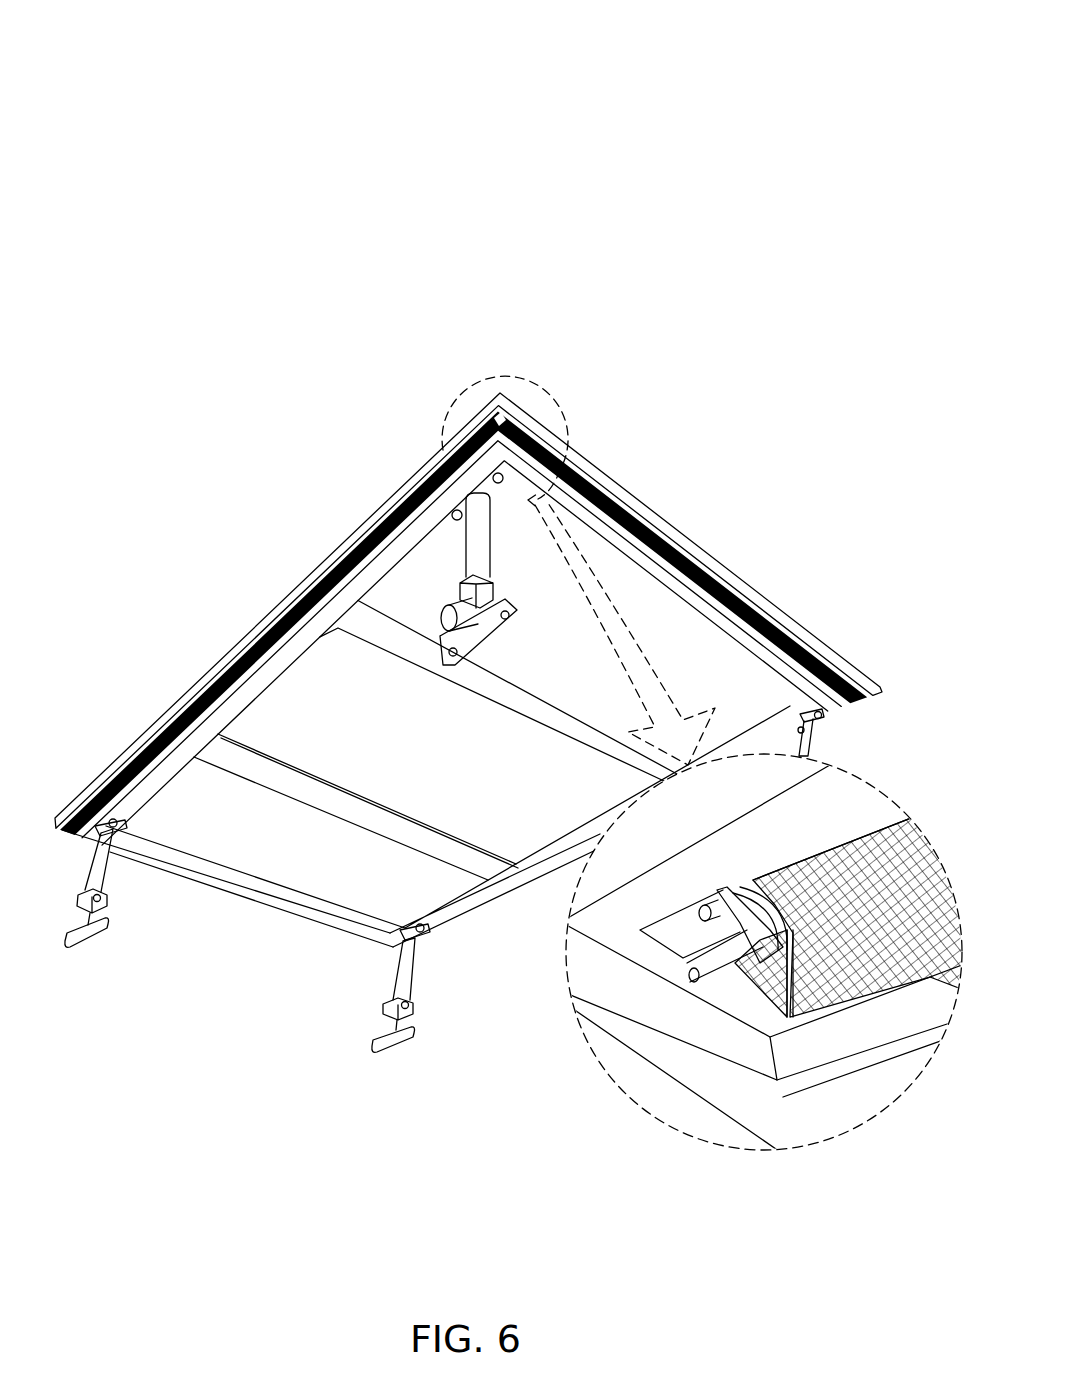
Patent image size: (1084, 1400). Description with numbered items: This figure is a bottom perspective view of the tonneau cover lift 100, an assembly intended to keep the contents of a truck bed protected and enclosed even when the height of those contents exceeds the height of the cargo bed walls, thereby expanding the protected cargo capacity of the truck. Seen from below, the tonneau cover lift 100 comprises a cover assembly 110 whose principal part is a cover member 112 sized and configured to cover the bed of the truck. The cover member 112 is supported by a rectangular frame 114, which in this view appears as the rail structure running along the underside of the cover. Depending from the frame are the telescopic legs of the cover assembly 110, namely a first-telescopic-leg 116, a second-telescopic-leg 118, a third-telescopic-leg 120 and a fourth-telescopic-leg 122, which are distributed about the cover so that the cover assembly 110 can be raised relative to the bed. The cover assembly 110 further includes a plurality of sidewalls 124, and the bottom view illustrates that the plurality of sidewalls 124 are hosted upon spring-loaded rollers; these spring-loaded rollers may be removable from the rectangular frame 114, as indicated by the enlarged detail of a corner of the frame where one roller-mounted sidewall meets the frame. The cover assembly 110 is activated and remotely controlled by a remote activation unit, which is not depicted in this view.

The tonneau cover lift 100 is at (688, 90).
The cover assembly 110 is at (730, 123).
The cover member 112 is at (287, 855).
The rectangular frame 114 is at (148, 792).
The first-telescopic-leg 116 is at (103, 866).
The second-telescopic-leg 118 is at (477, 545).
The third-telescopic-leg 120 is at (408, 990).
The fourth-telescopic-leg 122 is at (813, 740).
The plurality of sidewalls 124 is at (843, 998).